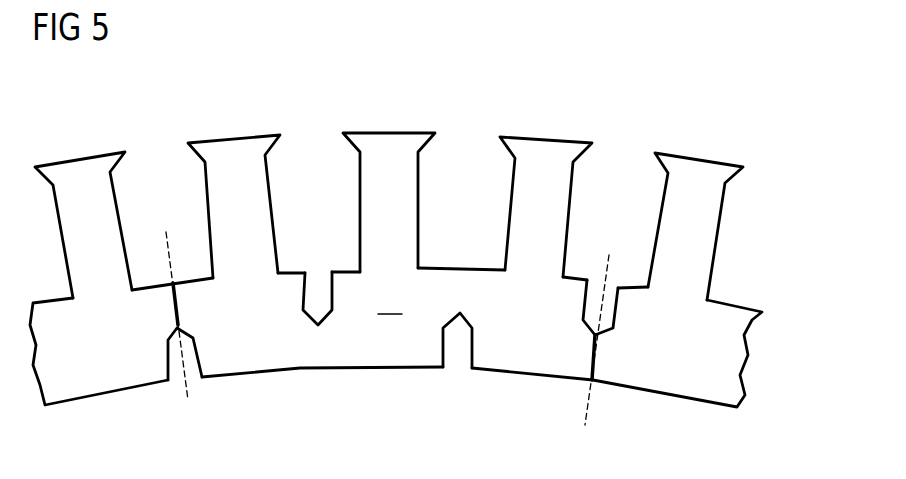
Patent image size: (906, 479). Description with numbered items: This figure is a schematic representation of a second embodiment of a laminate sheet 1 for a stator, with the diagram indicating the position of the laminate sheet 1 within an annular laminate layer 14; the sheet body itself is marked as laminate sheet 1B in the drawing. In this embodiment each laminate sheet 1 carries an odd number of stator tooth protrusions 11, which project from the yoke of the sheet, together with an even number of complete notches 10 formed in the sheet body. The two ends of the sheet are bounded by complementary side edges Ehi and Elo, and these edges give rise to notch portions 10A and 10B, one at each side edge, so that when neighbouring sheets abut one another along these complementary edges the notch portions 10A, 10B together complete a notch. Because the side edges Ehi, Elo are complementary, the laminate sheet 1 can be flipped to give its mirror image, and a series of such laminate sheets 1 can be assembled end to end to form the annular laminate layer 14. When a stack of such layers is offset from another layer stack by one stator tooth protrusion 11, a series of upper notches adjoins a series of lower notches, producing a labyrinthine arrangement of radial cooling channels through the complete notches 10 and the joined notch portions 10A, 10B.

The laminate sheet 1 is at (373, 358).
The laminate sheet 1B is at (390, 301).
The complete notch 10 is at (317, 283).
The notch portion 10A is at (177, 378).
The notch portion 10B is at (612, 287).
The stator tooth protrusion 11 is at (80, 170).
The annular laminate layer 14 is at (768, 264).
The complementary side edge Elo is at (192, 324).
The complementary side edge Ehi is at (587, 336).